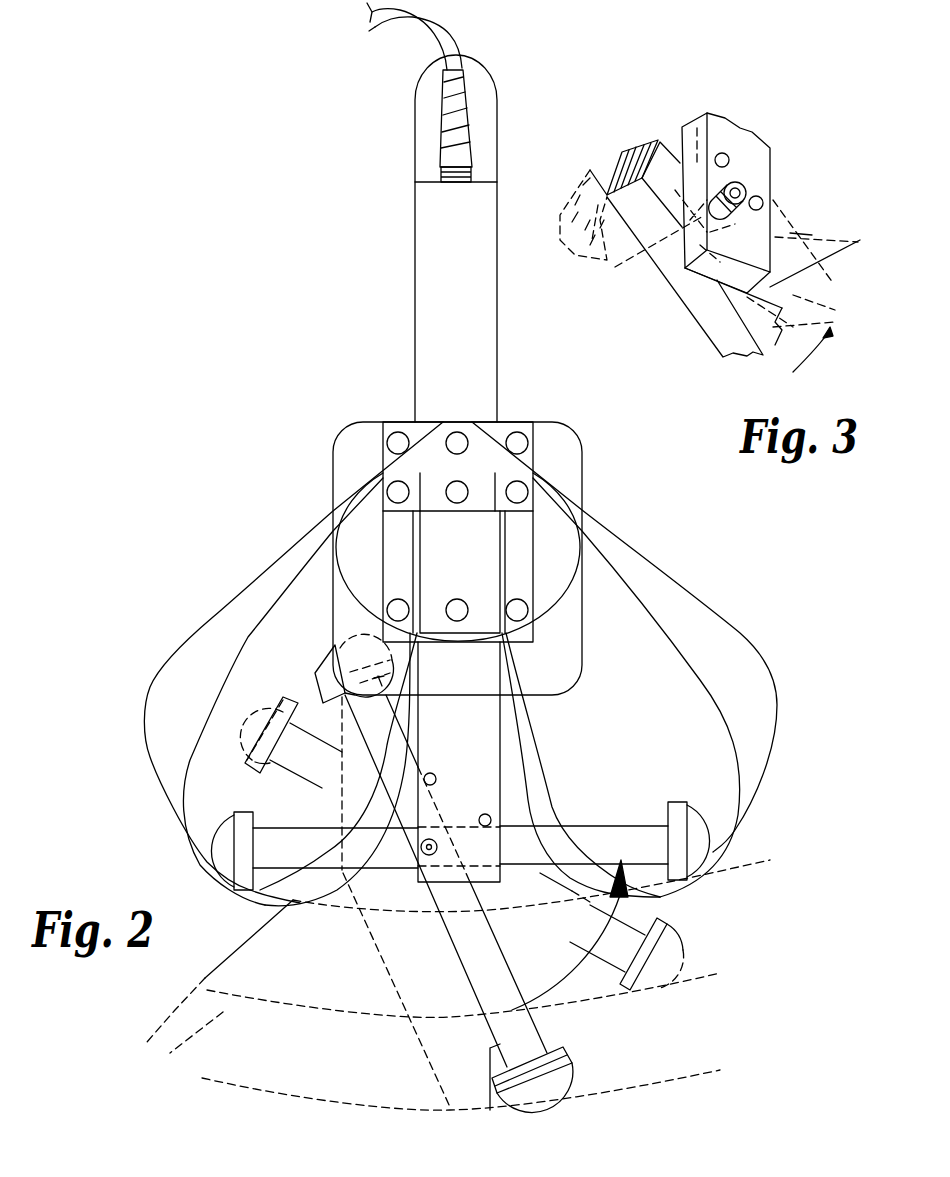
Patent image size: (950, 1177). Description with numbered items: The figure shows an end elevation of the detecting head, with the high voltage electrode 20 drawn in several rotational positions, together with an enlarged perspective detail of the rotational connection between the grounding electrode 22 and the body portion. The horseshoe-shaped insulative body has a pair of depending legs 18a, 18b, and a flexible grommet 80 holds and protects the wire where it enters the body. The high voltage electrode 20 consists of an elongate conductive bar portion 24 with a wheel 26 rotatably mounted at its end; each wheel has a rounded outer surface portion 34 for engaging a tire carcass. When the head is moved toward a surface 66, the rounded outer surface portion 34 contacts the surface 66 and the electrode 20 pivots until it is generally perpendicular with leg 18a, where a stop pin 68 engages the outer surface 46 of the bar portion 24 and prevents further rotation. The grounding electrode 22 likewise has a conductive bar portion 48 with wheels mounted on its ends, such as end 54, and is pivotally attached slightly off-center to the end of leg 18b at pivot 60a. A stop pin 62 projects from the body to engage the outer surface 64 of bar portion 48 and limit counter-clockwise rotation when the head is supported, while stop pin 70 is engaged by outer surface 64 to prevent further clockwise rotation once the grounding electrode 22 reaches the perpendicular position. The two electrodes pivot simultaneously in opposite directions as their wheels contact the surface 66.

In FIG. 2, the depending leg 18a is at (500, 405).
In FIG. 2, the flexible grommet 80 is at (460, 107).
In FIG. 2, the stop pin 68 is at (488, 808).
In FIG. 2, the outer surface 46 is at (602, 821).
In FIG. 2, the bar portion 24 is at (220, 843).
In FIG. 2, the wheel 26 is at (707, 832).
In FIG. 2, the high voltage electrode 20 is at (273, 852).
In FIG. 2, the rounded outer surface portion 34 is at (573, 1080).
In FIG. 2, the grounding electrode 22 is at (522, 1100).
In FIG. 2, the surface 66 is at (240, 1092).
In FIG. 3, the depending leg 18b is at (747, 143).
In FIG. 3, the stop pin 62 is at (697, 128).
In FIG. 3, the pivot 60a is at (813, 167).
In FIG. 3, the stop pin 70 is at (748, 198).
In FIG. 3, the bar portion 48 is at (702, 322).
In FIG. 3, the outer surface 64 is at (857, 243).
In FIG. 3, the end 54 is at (812, 235).